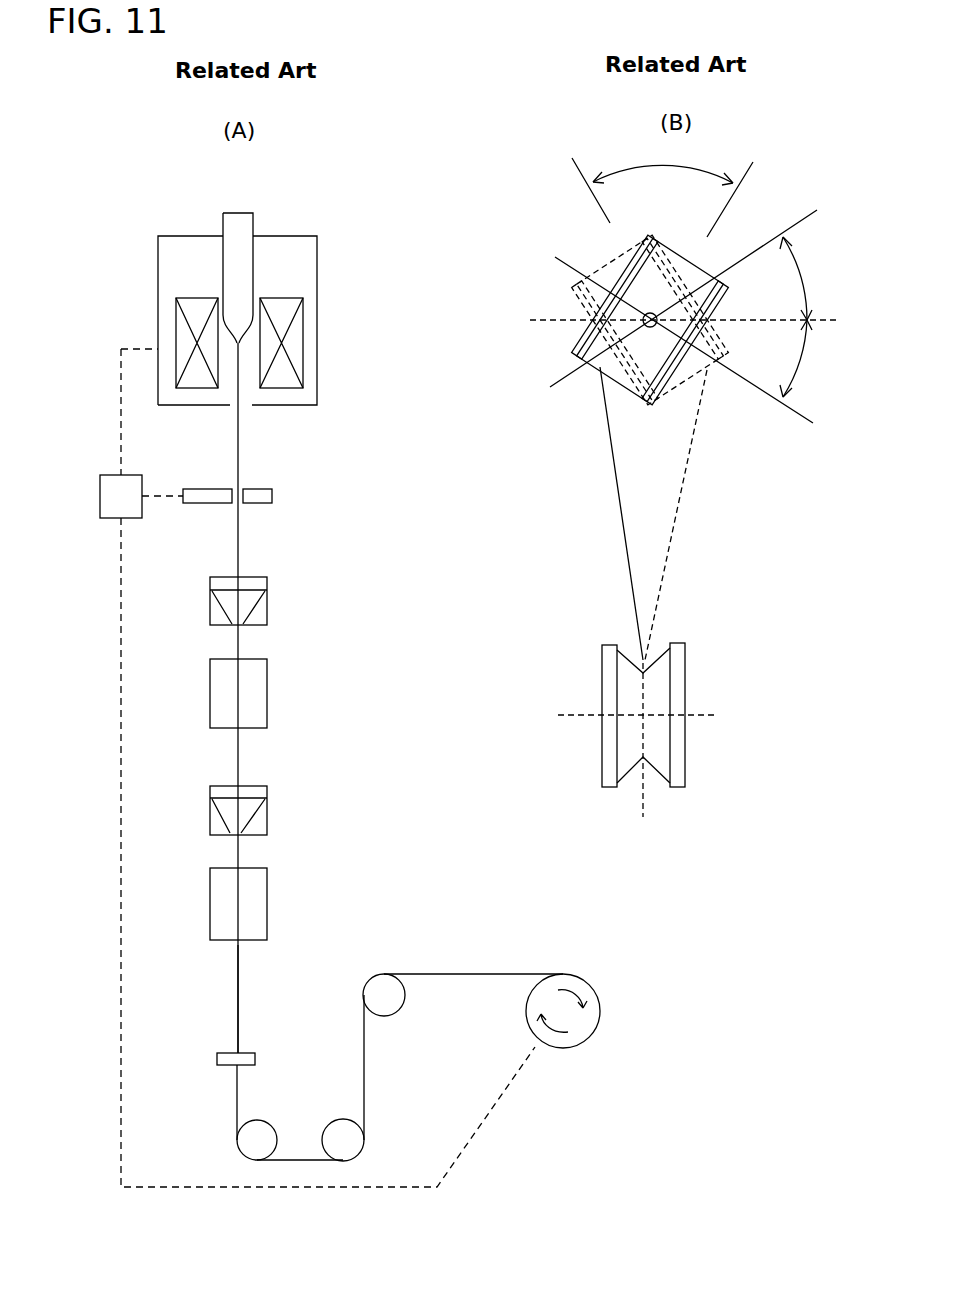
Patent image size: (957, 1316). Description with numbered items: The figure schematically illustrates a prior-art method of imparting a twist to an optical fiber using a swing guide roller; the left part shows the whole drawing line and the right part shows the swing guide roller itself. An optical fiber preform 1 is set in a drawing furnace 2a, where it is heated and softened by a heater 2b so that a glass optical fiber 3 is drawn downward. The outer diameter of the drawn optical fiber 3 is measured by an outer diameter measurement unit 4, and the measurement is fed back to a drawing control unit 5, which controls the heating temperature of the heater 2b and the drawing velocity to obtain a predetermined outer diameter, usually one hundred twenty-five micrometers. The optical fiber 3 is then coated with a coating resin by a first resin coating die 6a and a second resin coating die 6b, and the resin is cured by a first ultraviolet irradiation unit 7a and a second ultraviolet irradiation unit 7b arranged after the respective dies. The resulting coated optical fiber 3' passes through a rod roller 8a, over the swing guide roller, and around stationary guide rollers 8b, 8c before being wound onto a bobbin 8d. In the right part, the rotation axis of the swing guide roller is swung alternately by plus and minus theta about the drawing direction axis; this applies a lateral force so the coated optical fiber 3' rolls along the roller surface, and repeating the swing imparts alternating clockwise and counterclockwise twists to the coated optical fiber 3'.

The optical fiber preform 1 is at (240, 232).
The drawing furnace 2a is at (300, 283).
The heater 2b is at (293, 350).
The glass optical fiber 3 is at (268, 698).
The outer diameter measurement unit 4 is at (273, 496).
The drawing control unit 5 is at (136, 505).
The first resin coating die 6a is at (258, 614).
The first ultraviolet irradiation unit 7a is at (253, 690).
The second resin coating die 6b is at (258, 826).
The second ultraviolet irradiation unit 7b is at (253, 898).
The coated optical fiber 3' is at (272, 999).
The rod roller 8a is at (255, 1053).
The stationary guide roller 8b is at (360, 1138).
The stationary guide roller 8c is at (397, 1000).
The bobbin 8d is at (590, 1030).